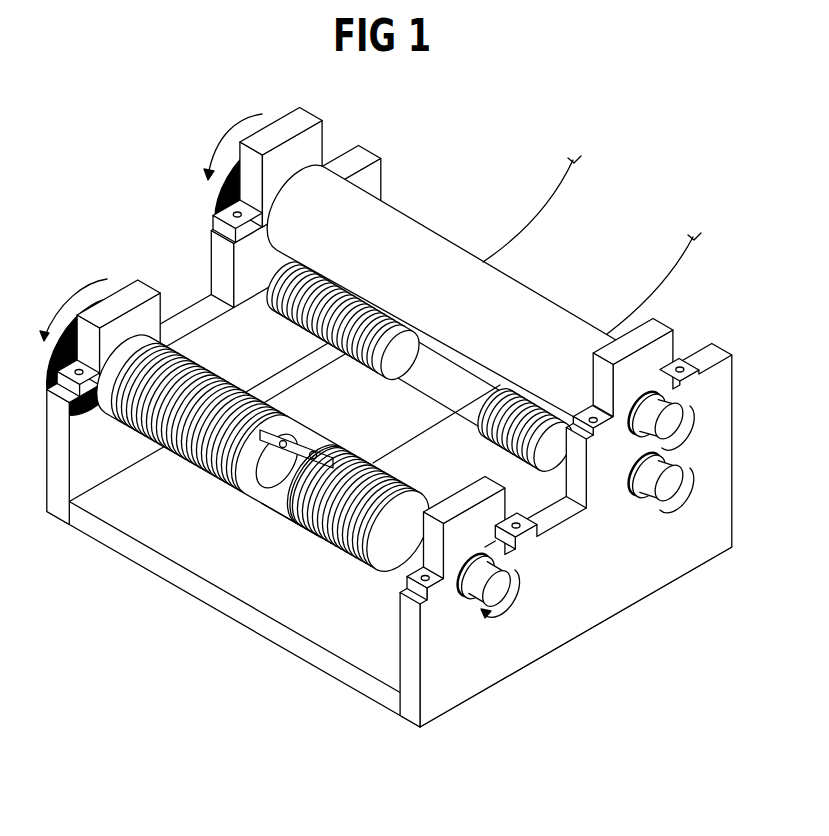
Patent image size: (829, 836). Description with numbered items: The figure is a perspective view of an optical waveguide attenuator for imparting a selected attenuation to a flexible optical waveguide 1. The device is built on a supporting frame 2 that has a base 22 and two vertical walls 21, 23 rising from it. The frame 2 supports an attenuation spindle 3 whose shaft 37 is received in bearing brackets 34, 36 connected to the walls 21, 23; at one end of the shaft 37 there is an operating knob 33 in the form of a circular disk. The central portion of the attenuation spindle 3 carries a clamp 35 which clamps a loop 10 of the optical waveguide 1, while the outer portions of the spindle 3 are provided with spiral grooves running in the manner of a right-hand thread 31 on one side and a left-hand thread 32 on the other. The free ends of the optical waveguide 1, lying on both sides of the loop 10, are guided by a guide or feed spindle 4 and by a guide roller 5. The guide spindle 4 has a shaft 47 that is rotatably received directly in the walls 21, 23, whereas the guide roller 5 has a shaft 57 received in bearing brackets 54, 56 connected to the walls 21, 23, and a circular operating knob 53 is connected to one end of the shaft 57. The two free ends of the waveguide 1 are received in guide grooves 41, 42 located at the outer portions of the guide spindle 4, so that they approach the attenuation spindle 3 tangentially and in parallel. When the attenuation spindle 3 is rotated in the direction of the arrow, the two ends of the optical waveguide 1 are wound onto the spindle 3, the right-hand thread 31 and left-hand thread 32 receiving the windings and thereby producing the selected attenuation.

The flexible optical waveguide 1 is at (567, 177).
The supporting frame 2 is at (208, 611).
The attenuation spindle 3 is at (288, 503).
The guide spindle 4 is at (433, 383).
The guide roller 5 is at (388, 228).
The loop 10 is at (258, 475).
The vertical wall 21 is at (56, 477).
The base 22 is at (118, 550).
The vertical wall 23 is at (447, 699).
The right-hand thread 31 is at (192, 444).
The left-hand thread 32 is at (365, 545).
The operating knob 33 is at (58, 360).
The bearing bracket 34 is at (146, 286).
The clamp 35 is at (300, 445).
The bearing bracket 36 is at (473, 500).
The shaft 37 is at (513, 597).
The guide groove 41 is at (312, 316).
The guide groove 42 is at (534, 447).
The shaft 47 is at (673, 491).
The operating knob 53 is at (214, 197).
The bearing bracket 54 is at (291, 122).
The bearing bracket 56 is at (662, 326).
The shaft 57 is at (673, 434).